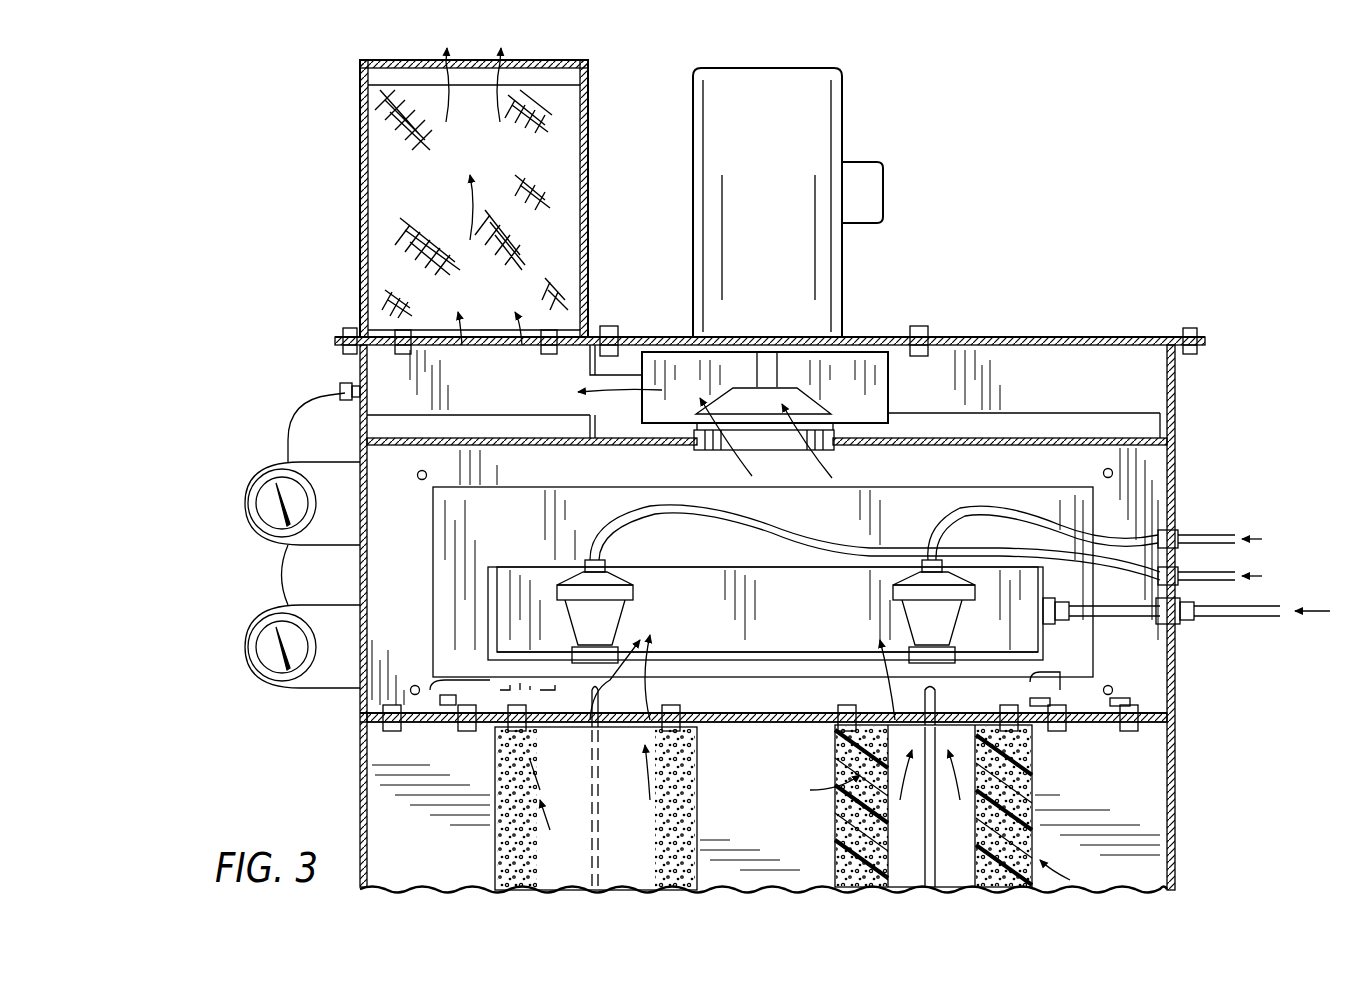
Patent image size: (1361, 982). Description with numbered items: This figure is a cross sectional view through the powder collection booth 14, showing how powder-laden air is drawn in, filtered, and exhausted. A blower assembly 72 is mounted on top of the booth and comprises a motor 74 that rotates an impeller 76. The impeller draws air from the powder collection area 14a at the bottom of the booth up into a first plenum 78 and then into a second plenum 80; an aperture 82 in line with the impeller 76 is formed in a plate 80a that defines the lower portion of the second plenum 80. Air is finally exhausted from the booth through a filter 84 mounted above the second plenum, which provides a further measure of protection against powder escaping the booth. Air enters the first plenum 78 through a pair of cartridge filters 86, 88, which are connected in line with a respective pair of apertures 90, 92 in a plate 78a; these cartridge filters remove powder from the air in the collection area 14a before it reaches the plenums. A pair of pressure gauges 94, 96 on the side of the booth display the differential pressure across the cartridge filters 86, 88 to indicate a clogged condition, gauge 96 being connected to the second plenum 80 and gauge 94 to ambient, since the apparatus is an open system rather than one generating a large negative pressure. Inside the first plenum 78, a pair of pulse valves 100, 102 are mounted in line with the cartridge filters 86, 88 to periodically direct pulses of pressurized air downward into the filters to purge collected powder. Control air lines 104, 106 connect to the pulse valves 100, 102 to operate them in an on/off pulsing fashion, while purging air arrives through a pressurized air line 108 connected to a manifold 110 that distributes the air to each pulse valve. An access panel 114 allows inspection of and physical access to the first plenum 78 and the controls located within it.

The powder collection booth 14 is at (1108, 332).
The powder collection area 14a is at (763, 829).
The blower assembly 72 is at (905, 272).
The motor 74 is at (788, 202).
The impeller 76 is at (888, 388).
The first plenum 78 is at (765, 577).
The plate 78a is at (1076, 720).
The second plenum 80 is at (763, 391).
The plate 80a is at (850, 440).
The aperture 82 is at (728, 440).
The filter 84 is at (474, 196).
The cartridge filter 86 is at (505, 862).
The cartridge filter 88 is at (850, 825).
The aperture 90 is at (540, 725).
The aperture 92 is at (880, 730).
The pressure gauge 94 is at (248, 640).
The pressure gauge 96 is at (248, 488).
The pulse valve 100 is at (620, 605).
The pulse valve 102 is at (940, 625).
The control air line 104 is at (1220, 530).
The control air line 106 is at (1232, 568).
The pressurized air line 108 is at (1255, 622).
The manifold 110 is at (765, 643).
The access panel 114 is at (975, 487).